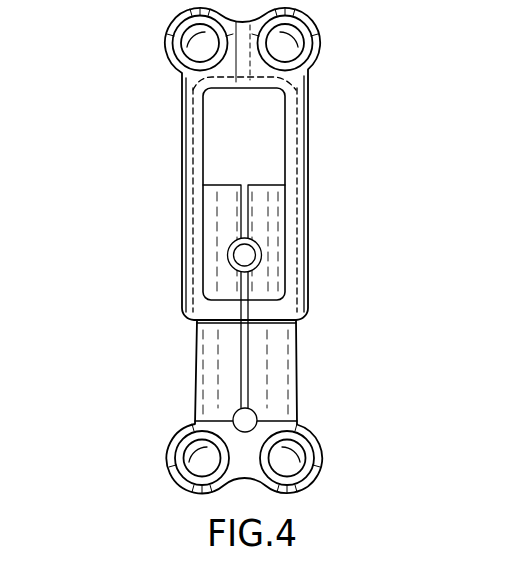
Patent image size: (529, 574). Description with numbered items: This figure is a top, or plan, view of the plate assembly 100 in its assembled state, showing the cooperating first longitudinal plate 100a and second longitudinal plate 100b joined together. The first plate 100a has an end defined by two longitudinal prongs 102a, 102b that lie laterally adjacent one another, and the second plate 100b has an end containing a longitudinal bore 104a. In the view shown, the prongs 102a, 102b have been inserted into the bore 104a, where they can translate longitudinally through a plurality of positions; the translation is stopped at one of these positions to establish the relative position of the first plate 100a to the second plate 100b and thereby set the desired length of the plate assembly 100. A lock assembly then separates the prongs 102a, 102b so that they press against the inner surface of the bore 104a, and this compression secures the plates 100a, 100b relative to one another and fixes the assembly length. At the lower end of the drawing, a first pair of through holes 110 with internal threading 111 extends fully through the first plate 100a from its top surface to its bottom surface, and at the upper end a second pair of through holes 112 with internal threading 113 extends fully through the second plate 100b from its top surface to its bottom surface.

The plate assembly 100 is at (365, 255).
The first longitudinal plate 100a is at (308, 383).
The second longitudinal plate 100b is at (170, 144).
The longitudinal prong 102a is at (218, 209).
The longitudinal prong 102b is at (268, 200).
The longitudinal bore 104a is at (262, 114).
The first pair of through holes 110 is at (198, 463).
The internal threading 111 is at (192, 455).
The second pair of through holes 112 is at (190, 53).
The internal threading 113 is at (197, 40).